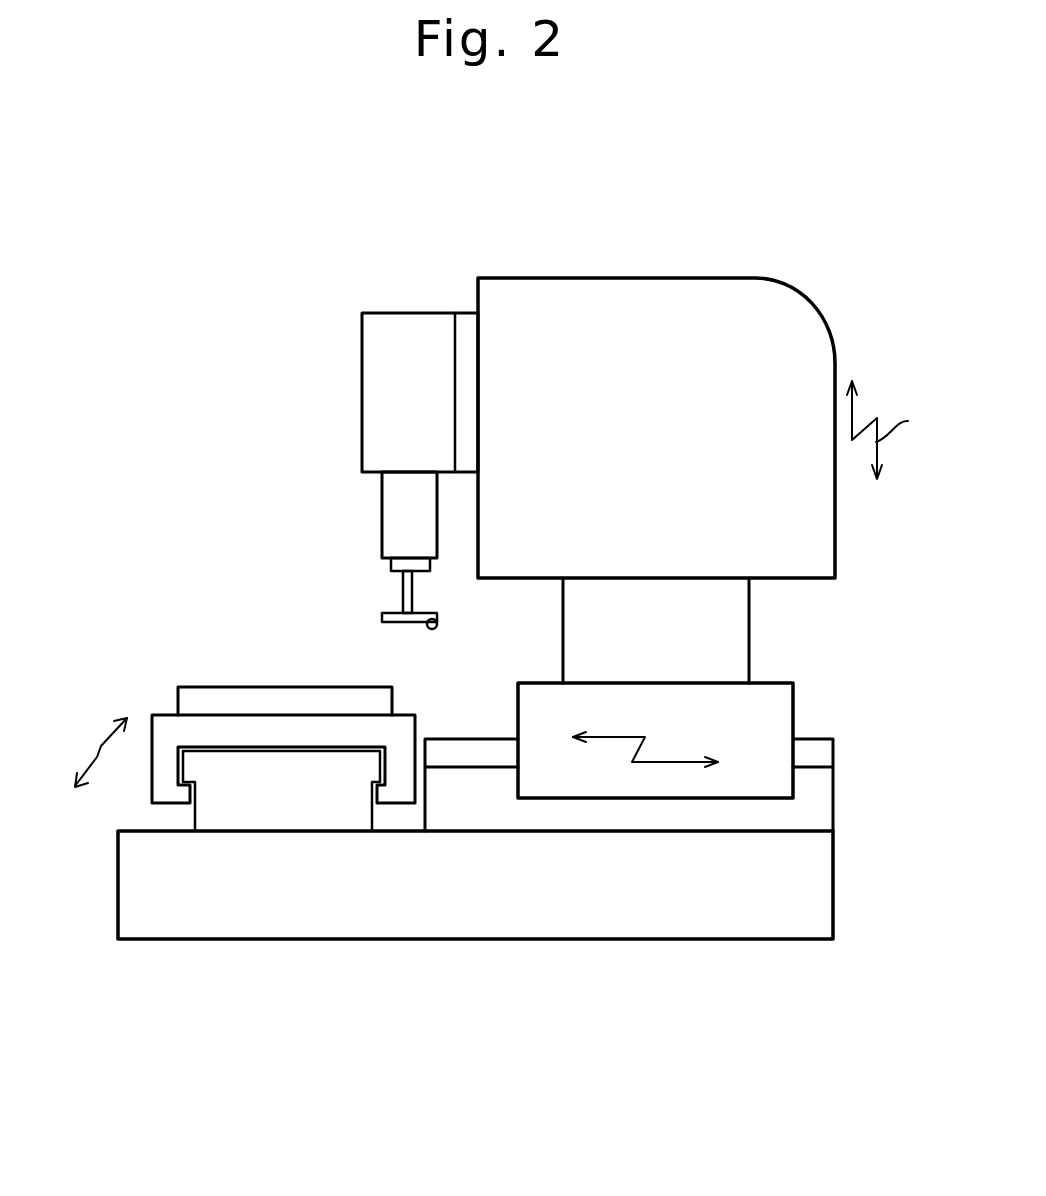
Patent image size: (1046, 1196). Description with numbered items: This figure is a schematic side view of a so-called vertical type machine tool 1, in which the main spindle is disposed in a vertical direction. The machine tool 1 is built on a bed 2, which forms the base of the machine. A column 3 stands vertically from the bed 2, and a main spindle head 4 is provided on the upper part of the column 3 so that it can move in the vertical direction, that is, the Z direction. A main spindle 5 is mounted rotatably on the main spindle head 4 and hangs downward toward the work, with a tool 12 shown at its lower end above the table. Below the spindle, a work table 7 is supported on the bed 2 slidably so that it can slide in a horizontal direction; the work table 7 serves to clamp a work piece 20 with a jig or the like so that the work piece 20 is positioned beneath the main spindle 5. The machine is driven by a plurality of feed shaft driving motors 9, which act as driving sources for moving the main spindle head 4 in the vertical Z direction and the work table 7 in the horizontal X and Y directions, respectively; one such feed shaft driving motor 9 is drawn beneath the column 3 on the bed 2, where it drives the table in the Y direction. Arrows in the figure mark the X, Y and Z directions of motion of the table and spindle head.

The machine tool 1 is at (814, 270).
The bed 2 is at (446, 912).
The column 3 is at (817, 548).
The main spindle head 4 is at (373, 393).
The main spindle 5 is at (398, 523).
The work table 7 is at (414, 716).
The feed shaft driving motor 9 is at (793, 684).
The tool 12 is at (403, 598).
The work piece 20 is at (263, 697).